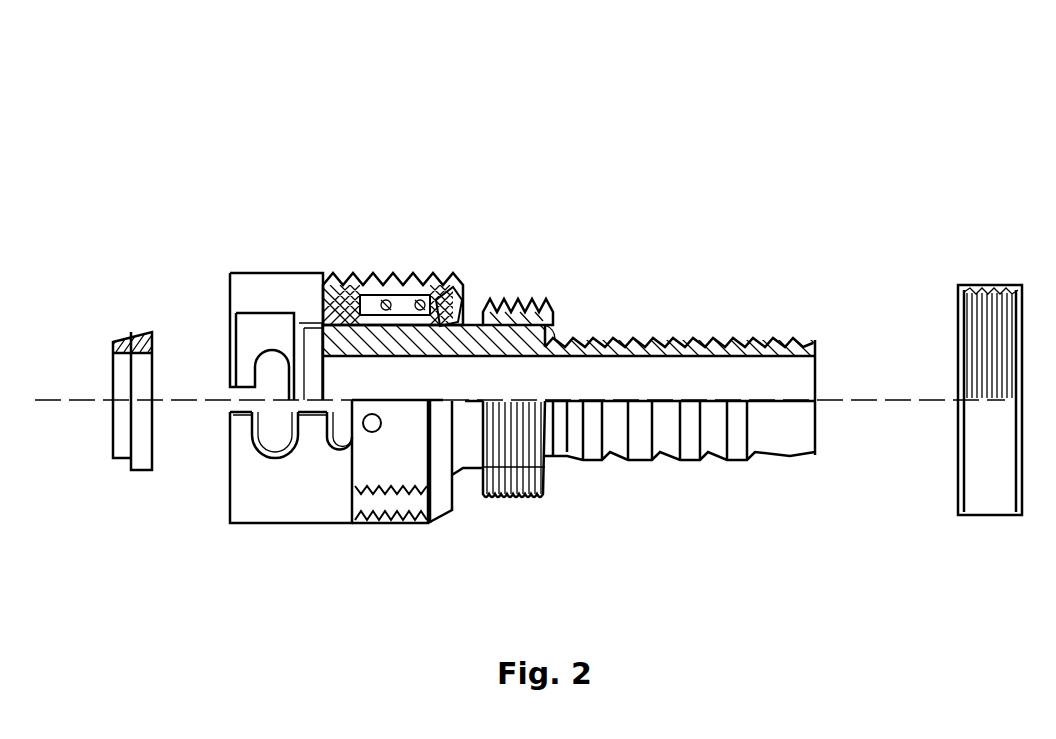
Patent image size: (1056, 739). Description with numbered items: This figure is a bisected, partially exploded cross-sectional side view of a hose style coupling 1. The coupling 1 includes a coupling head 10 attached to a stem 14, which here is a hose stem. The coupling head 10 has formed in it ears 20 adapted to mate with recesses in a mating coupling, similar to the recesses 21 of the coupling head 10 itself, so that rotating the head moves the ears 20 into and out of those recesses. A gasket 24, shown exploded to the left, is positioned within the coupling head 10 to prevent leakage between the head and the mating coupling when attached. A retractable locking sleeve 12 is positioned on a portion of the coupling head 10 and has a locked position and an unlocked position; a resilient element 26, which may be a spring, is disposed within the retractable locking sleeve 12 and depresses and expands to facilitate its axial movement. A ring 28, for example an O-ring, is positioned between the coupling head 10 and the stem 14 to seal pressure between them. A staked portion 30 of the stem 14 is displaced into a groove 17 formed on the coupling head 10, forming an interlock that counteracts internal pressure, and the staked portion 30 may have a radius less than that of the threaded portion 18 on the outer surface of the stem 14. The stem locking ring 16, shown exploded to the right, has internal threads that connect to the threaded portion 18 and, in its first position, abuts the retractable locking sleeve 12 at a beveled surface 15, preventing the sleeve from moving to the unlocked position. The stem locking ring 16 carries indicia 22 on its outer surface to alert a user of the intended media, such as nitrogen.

The coupling 1 is at (772, 121).
The coupling head 10 is at (315, 403).
The retractable locking sleeve 12 is at (470, 248).
The stem 14 is at (571, 413).
The beveled surface 15 is at (428, 518).
The stem locking ring 16 is at (954, 399).
The groove 17 is at (515, 332).
The threaded portion 18 is at (522, 478).
The ears 20 is at (245, 435).
The recesses 21 is at (277, 455).
The indicia 22 is at (983, 462).
The gasket 24 is at (135, 334).
The resilient element 26 is at (402, 272).
The ring 28 is at (440, 320).
The staked portion 30 is at (463, 456).